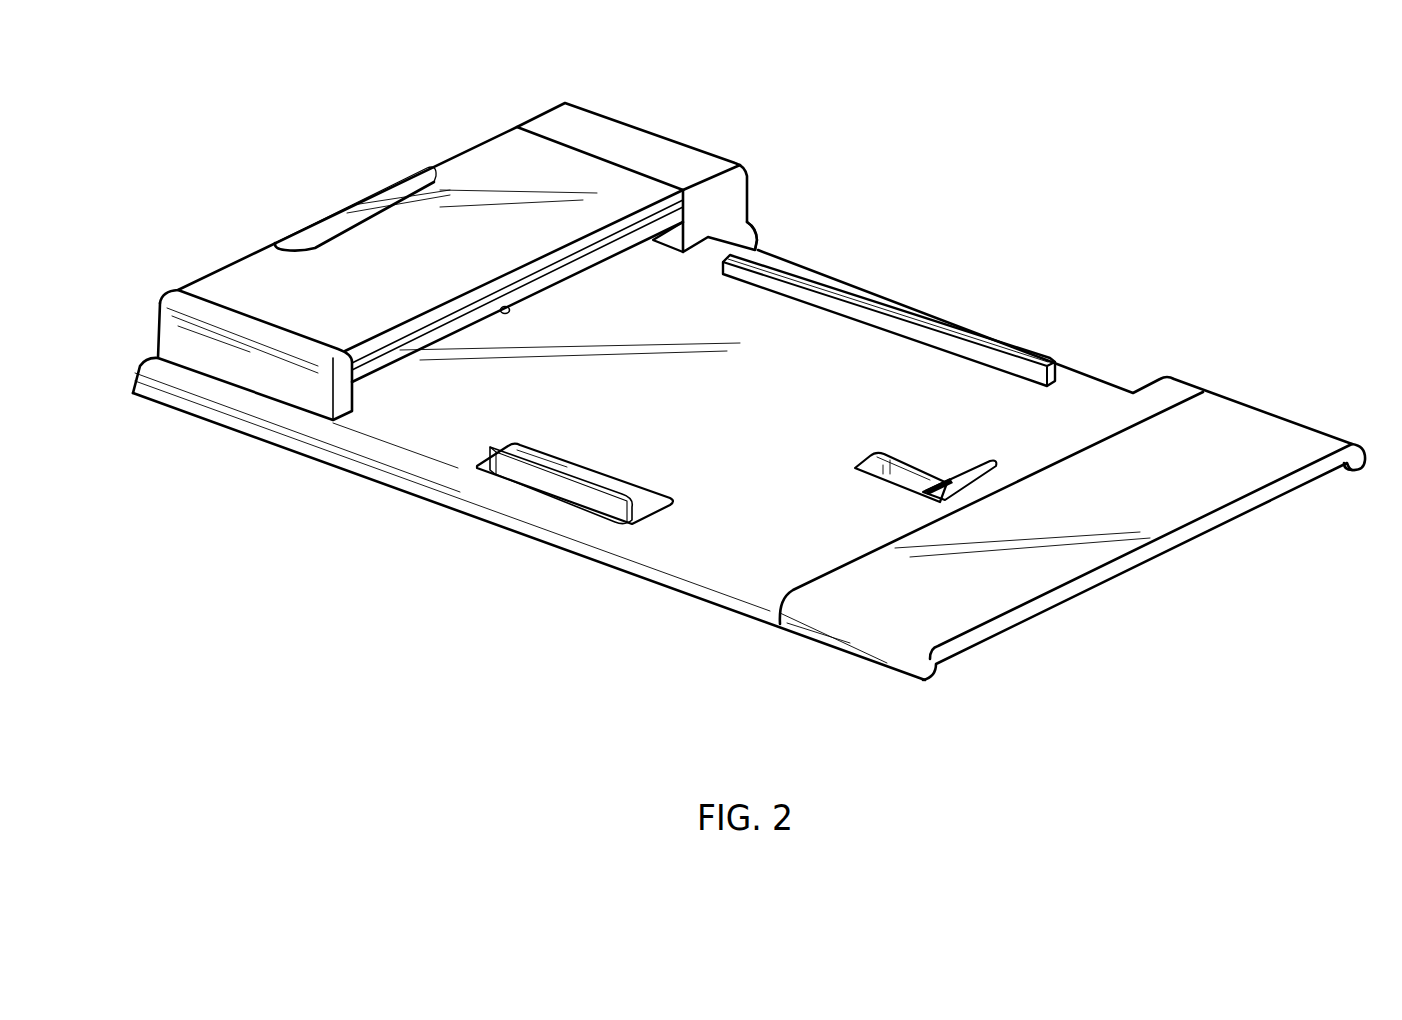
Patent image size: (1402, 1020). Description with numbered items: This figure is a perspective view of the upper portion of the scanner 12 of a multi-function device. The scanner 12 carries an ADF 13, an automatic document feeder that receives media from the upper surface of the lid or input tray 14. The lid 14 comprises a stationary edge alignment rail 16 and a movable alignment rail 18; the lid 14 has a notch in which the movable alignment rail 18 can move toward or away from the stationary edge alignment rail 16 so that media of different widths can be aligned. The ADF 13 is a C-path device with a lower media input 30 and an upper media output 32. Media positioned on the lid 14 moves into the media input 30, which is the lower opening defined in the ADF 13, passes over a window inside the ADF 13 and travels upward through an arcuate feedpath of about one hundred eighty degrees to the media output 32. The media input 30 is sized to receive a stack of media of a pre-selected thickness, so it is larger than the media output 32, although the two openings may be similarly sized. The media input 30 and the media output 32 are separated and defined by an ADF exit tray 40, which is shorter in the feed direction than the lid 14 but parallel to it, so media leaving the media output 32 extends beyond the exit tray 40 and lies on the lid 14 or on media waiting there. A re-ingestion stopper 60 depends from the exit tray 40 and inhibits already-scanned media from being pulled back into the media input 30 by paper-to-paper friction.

The scanner 12 is at (118, 309).
The ADF 13 is at (630, 121).
The lid/input tray 14 is at (791, 451).
The stationary edge alignment rail 16 is at (893, 310).
The movable alignment rail 18 is at (668, 503).
The media input 30 is at (630, 287).
The media output 32 is at (663, 215).
The ADF exit tray 40 is at (663, 233).
The re-ingestion stopper 60 is at (508, 312).